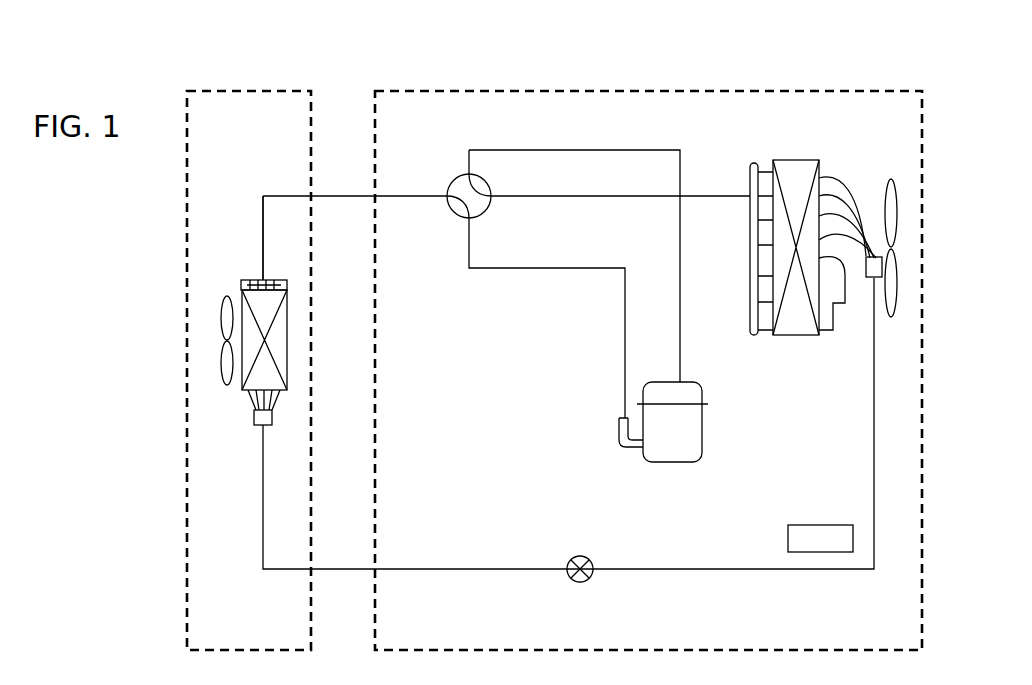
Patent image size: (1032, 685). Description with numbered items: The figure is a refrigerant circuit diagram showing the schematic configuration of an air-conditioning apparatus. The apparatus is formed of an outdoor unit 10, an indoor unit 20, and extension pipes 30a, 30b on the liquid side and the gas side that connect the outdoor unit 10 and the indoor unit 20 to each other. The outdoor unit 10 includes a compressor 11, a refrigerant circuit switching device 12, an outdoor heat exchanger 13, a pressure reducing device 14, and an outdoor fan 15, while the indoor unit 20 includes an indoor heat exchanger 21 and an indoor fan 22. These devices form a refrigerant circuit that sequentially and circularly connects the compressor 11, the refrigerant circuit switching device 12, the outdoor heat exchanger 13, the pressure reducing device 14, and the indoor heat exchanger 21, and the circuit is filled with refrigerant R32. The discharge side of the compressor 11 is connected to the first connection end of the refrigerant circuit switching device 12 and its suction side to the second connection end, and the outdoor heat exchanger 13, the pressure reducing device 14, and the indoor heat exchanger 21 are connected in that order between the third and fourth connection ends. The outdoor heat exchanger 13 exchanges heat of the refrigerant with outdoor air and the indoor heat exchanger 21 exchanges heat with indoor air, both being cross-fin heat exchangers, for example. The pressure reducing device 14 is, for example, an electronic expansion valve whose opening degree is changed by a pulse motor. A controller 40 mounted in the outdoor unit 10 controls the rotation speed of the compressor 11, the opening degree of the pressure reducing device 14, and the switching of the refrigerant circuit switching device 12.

The outdoor unit 10 is at (645, 82).
The compressor 11 is at (702, 426).
The refrigerant circuit switching device 12 is at (453, 181).
The outdoor heat exchanger 13 is at (800, 160).
The pressure reducing device 14 is at (588, 558).
The outdoor fan 15 is at (898, 330).
The indoor unit 20 is at (241, 86).
The indoor heat exchanger 21 is at (252, 280).
The indoor fan 22 is at (228, 385).
The extension pipe 30a is at (338, 568).
The extension pipe 30b is at (344, 196).
The controller 40 is at (820, 553).